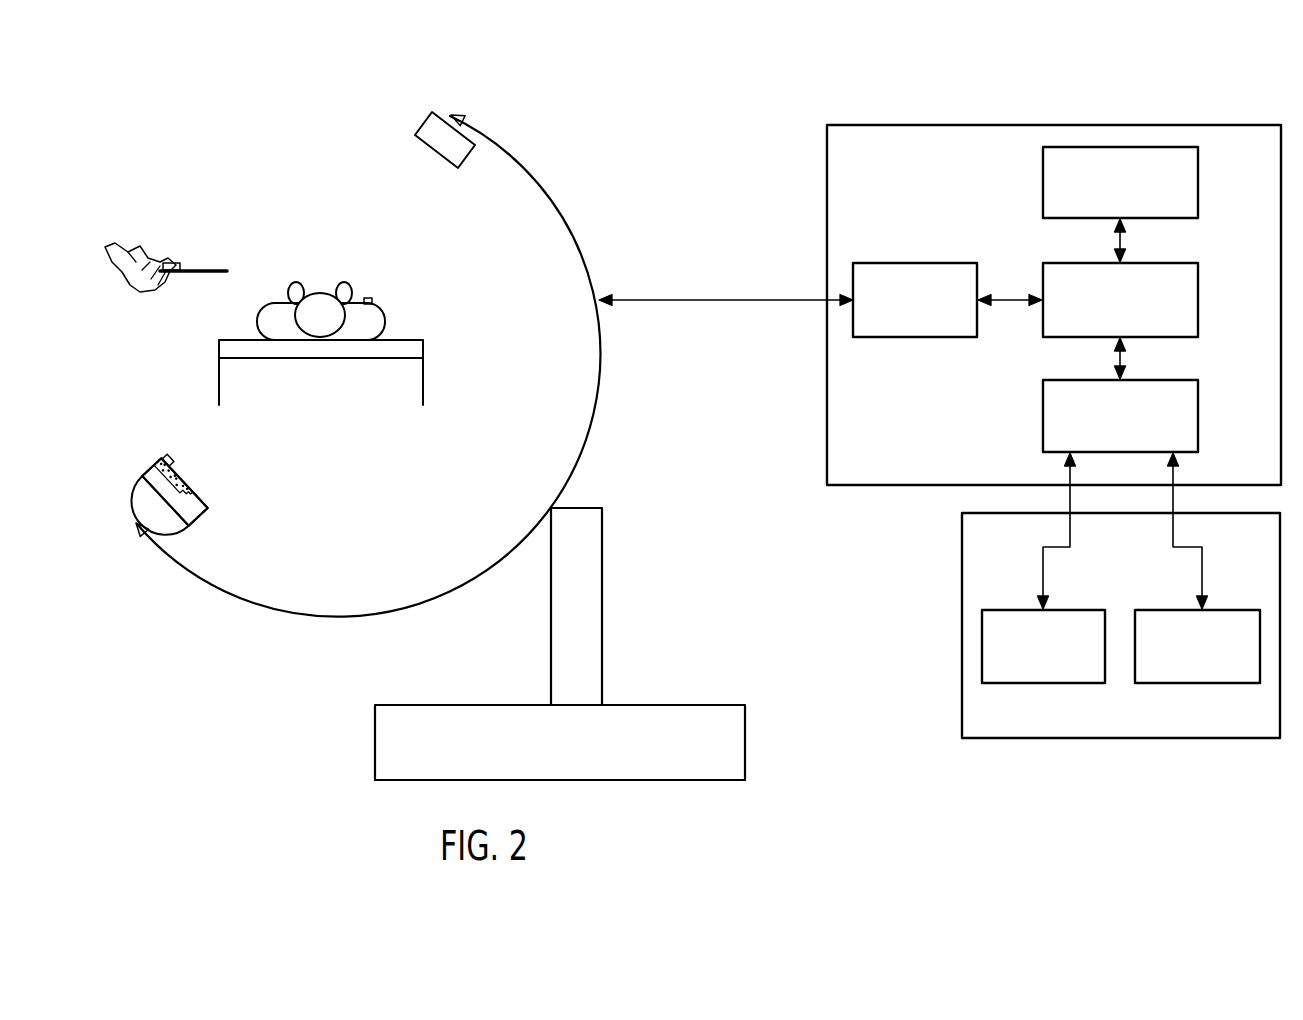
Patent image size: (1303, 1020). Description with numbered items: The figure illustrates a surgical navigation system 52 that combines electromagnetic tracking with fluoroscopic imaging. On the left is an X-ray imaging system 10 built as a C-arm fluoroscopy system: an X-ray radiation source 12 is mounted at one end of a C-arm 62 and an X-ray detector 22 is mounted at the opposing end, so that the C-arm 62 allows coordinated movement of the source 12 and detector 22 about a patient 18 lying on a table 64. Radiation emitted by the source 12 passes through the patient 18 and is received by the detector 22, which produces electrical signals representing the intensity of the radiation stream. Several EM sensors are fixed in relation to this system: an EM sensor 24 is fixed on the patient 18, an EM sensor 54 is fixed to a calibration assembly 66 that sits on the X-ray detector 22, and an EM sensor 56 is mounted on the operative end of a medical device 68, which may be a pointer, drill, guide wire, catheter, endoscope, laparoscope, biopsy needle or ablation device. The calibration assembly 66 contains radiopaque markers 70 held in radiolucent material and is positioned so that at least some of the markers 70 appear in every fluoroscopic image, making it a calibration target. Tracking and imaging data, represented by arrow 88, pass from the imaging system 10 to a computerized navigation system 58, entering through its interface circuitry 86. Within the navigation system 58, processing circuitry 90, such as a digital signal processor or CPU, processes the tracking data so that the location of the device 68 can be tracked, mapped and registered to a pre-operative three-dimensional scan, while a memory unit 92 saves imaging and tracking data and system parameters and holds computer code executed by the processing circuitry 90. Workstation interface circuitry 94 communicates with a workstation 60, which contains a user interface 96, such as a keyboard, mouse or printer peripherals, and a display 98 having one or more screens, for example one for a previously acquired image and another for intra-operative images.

The X-ray imaging system 10 is at (617, 190).
The X-ray radiation source 12 is at (427, 120).
The patient 18 is at (322, 292).
The X-ray detector 22 is at (190, 532).
The EM sensor 24 is at (370, 298).
The surgical navigation system 52 is at (1172, 833).
The EM sensor 54 is at (160, 458).
The EM sensor 56 is at (173, 262).
The computerized navigation system 58 is at (826, 124).
The operator workstation 60 is at (962, 578).
The C-arm 62 is at (526, 172).
The table 64 is at (423, 367).
The calibration assembly 66 is at (206, 500).
The medical device 68 is at (195, 274).
The radiopaque markers 70 is at (178, 485).
The interface circuitry 86 is at (915, 263).
The tracking and imaging data 88 is at (663, 300).
The processing circuitry 90 is at (1200, 295).
The memory unit 92 is at (1200, 172).
The workstation interface circuitry 94 is at (1200, 410).
The user interface 96 is at (1030, 684).
The display 98 is at (1188, 684).